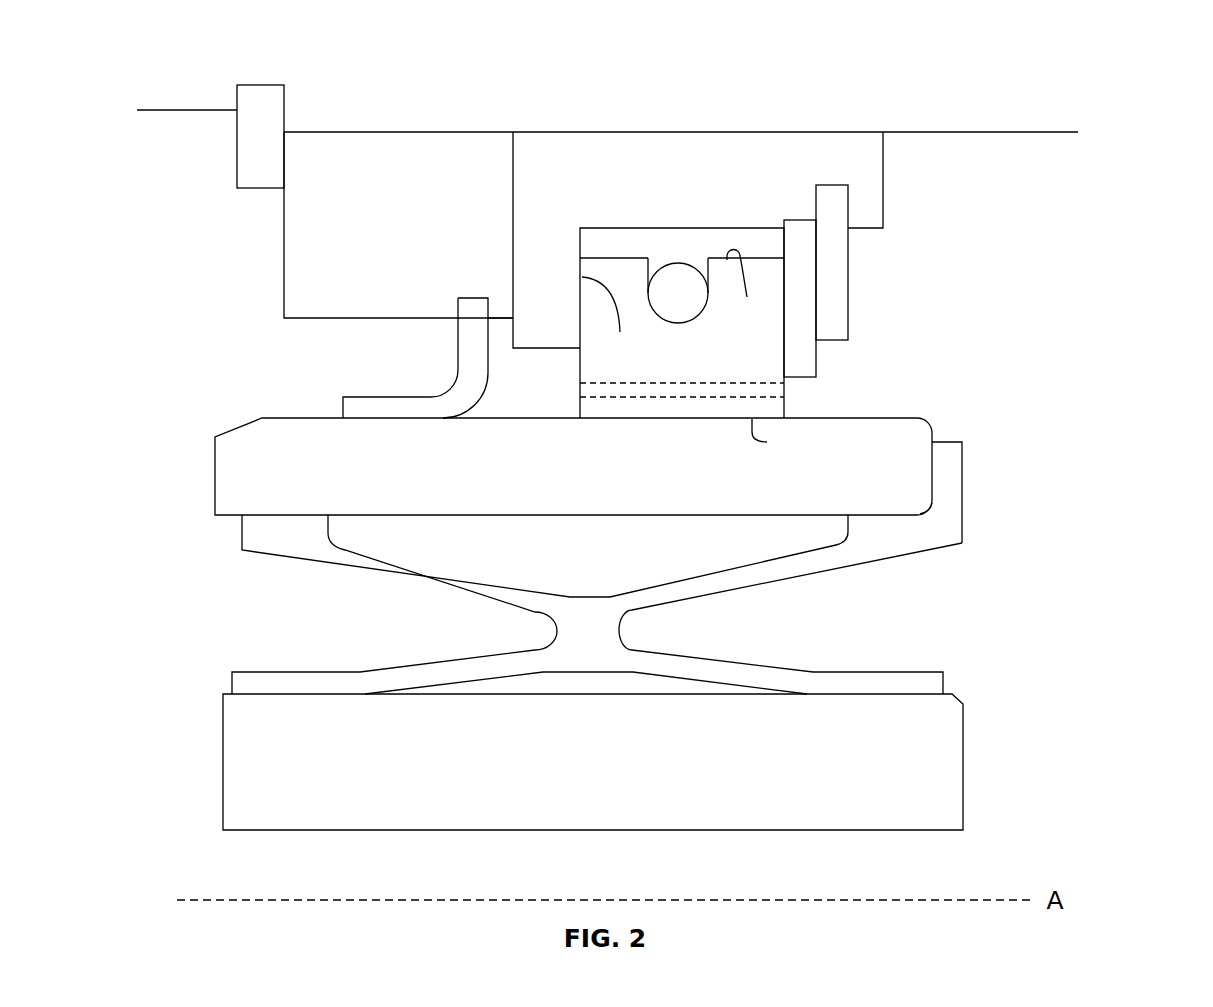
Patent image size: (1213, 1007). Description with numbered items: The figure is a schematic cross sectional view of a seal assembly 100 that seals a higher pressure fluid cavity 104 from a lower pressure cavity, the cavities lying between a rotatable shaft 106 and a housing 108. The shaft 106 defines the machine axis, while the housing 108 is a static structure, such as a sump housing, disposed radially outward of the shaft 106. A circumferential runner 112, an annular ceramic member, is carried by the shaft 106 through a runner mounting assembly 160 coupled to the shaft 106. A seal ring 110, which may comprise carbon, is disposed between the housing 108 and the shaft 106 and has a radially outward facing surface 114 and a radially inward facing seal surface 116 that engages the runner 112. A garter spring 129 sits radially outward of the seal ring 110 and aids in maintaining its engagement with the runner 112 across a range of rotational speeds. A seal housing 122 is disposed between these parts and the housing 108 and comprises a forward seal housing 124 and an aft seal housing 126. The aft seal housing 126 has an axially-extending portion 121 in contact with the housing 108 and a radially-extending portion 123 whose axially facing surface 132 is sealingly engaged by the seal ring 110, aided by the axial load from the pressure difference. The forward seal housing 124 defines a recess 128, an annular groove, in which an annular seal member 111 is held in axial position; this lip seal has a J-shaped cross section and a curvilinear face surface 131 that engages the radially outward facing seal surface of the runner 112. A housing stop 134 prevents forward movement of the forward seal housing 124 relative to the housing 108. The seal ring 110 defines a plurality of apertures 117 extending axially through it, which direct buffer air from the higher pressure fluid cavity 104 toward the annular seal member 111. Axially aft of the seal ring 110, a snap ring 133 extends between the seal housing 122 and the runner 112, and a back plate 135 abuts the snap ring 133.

The seal assembly 100 is at (1112, 58).
The higher pressure fluid cavity 104 is at (1018, 213).
The rotatable shaft 106 is at (905, 832).
The housing 108 is at (954, 110).
The seal ring 110 is at (697, 366).
The annular seal member 111 is at (401, 395).
The circumferential runner 112 is at (549, 480).
The radially outward facing surface 114 is at (748, 289).
The radially inward facing seal surface 116 is at (767, 442).
The apertures 117 is at (765, 372).
The axially-extending portion 121 is at (709, 205).
The seal housing 122 is at (230, 236).
The radially-extending portion 123 is at (525, 333).
The forward seal housing 124 is at (325, 226).
The aft seal housing 126 is at (585, 203).
The recess 128 is at (450, 304).
The garter spring 129 is at (688, 278).
The curvilinear face surface 131 is at (484, 395).
The axially facing surface 132 is at (614, 321).
The snap ring 133 is at (840, 203).
The housing stop 134 is at (268, 95).
The back plate 135 is at (805, 233).
The runner mounting assembly 160 is at (975, 614).